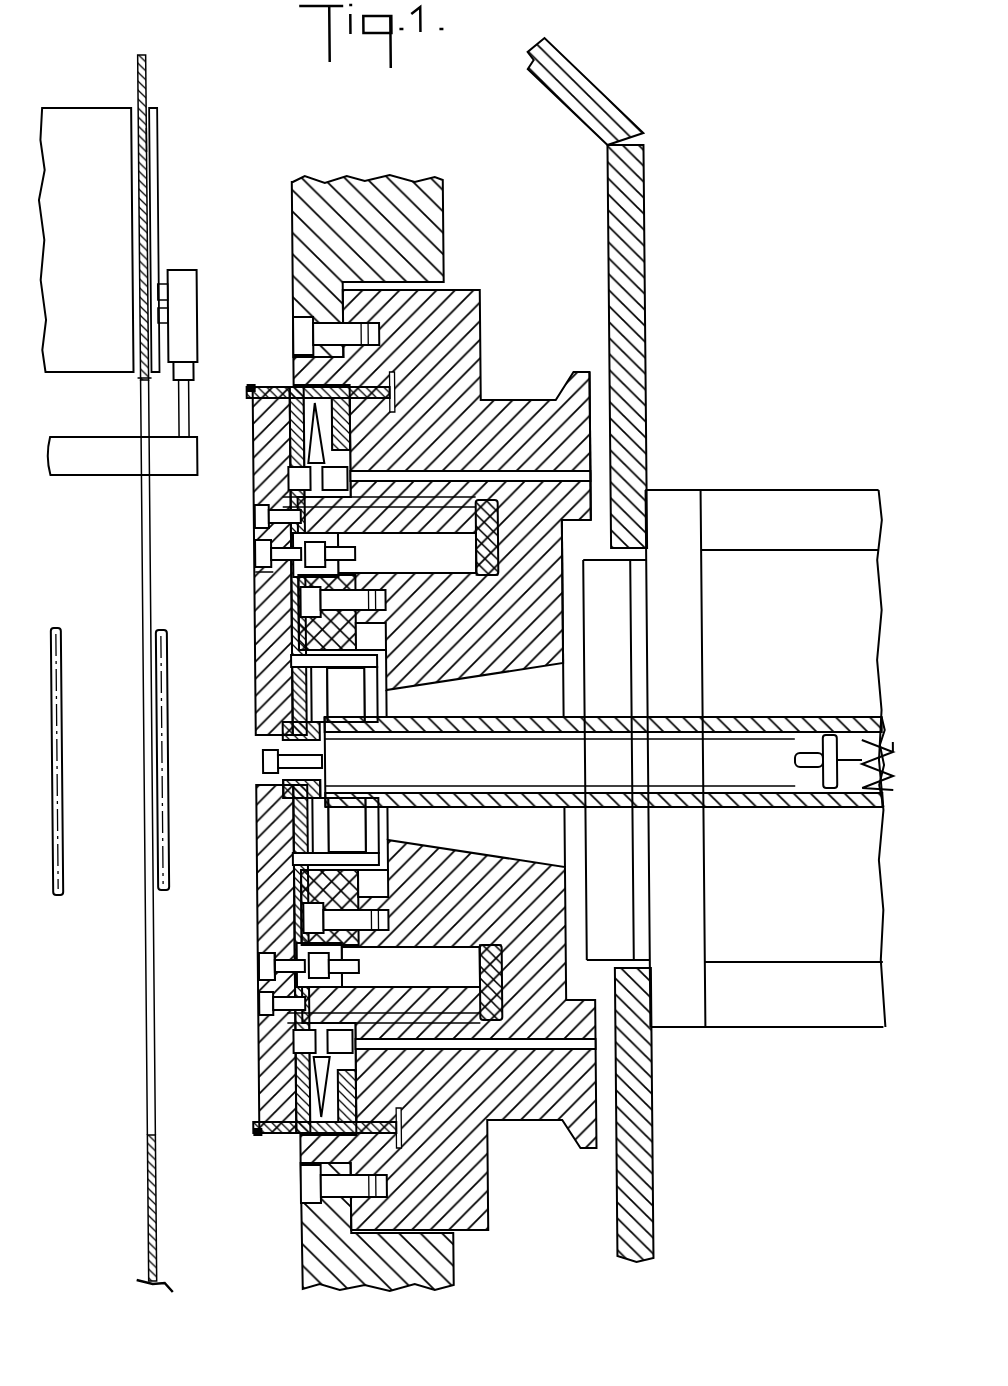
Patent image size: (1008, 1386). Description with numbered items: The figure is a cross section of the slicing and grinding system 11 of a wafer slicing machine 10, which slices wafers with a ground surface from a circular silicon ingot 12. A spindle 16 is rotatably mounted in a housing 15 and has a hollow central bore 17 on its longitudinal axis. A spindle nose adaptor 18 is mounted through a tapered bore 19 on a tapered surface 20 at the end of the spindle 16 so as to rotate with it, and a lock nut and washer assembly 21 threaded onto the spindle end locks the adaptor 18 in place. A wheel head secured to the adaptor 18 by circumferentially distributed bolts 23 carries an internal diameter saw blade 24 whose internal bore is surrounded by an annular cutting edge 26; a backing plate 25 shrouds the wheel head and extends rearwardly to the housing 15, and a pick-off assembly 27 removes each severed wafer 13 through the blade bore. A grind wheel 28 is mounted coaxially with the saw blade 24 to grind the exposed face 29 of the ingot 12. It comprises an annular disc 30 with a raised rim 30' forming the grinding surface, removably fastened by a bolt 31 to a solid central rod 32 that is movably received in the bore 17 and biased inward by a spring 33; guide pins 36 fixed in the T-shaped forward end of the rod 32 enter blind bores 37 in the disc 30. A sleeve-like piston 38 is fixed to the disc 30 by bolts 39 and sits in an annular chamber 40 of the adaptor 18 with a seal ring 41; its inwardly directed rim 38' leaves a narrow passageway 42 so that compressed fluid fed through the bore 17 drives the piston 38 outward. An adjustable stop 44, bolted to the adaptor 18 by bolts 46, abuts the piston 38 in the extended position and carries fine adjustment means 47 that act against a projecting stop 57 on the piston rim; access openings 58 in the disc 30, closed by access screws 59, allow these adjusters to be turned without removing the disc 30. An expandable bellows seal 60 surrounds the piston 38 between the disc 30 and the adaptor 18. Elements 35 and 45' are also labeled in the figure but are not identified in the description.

The wafer slicing machine 10 is at (760, 297).
The slicing and grinding system 11 is at (691, 415).
The ingot 12 is at (89, 120).
The wafer 13 is at (158, 178).
The housing 15 is at (803, 497).
The spindle 16 is at (808, 716).
The hollow central bore 17 is at (855, 717).
The spindle nose adaptor 18 is at (470, 396).
The tapered bore 19 is at (460, 670).
The tapered surface 20 is at (511, 670).
The lock nut and washer assembly 21 is at (389, 703).
The bolts 23 is at (296, 330).
The internal diameter saw blade 24 is at (153, 72).
The backing plate 25 is at (632, 202).
The annular cutting edge 26 is at (140, 380).
The pick-off assembly 27 is at (199, 286).
The grind wheel 28 is at (256, 695).
The exposed face 29 is at (147, 140).
The annular disc 30 is at (258, 760).
The raised rim 30' is at (281, 401).
The bolt 31 is at (262, 761).
The central rod 32 is at (741, 784).
The spring 33 is at (860, 802).
The nut 35 is at (262, 789).
The guide pins 36 is at (313, 718).
The blind bores 37 is at (262, 727).
The sleeve-like piston 38 is at (382, 760).
The inwardly directed rim 38' is at (510, 760).
The bolts 39 is at (257, 515).
The annular chamber 40 is at (448, 566).
The seal ring 41 is at (482, 500).
The passageway 42 is at (498, 580).
The adjustable stop 44 is at (262, 653).
The recess 45' is at (392, 748).
The bolts 46 is at (387, 597).
The fine adjustment means 47 is at (358, 553).
The projecting stop 57 is at (257, 552).
The access openings 58 is at (262, 571).
The access screws 59 is at (265, 960).
The expandable bellows seal 60 is at (262, 427).